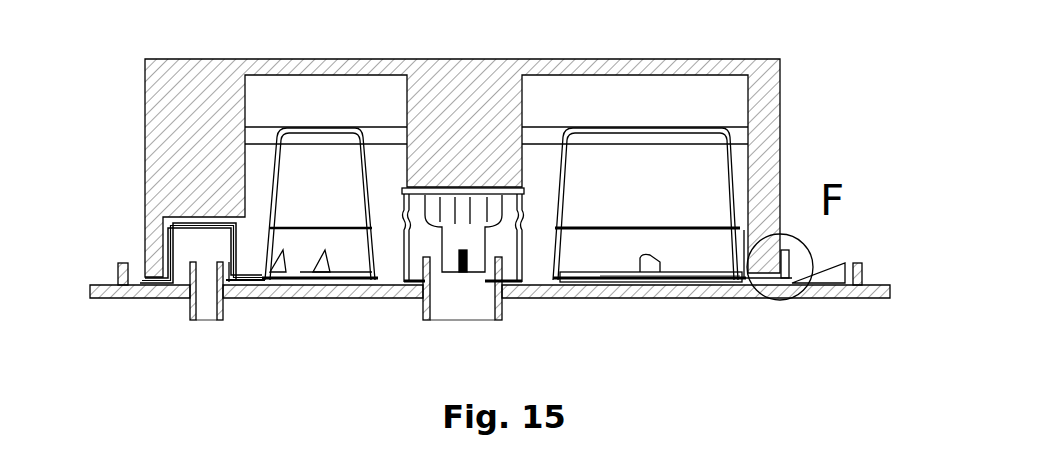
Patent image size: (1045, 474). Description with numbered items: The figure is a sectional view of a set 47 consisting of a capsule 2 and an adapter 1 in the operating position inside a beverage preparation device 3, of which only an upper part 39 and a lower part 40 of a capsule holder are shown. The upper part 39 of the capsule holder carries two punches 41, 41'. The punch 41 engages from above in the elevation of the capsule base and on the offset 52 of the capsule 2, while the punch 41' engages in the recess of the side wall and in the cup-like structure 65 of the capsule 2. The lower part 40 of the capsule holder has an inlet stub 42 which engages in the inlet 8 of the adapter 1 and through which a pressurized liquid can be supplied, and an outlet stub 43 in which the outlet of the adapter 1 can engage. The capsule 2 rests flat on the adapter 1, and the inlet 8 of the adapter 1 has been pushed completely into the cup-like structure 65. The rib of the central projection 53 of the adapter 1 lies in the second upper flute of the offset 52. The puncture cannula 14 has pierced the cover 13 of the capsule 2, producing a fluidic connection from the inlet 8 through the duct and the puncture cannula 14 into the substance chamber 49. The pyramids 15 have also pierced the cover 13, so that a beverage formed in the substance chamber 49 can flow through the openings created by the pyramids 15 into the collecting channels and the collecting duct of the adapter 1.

The adapter 1 is at (818, 288).
The capsule 2 is at (744, 208).
The beverage preparation device 3 is at (124, 90).
The inlet 8 is at (229, 282).
The cover 13 is at (704, 272).
The puncture cannula 14 is at (663, 262).
The pyramids 15 is at (325, 278).
The upper part of the capsule holder 39 is at (145, 138).
The lower part of the capsule holder 40 is at (135, 299).
The punch 41 is at (627, 145).
The punch 41' is at (309, 145).
The inlet stub 42 is at (205, 320).
The outlet stub 43 is at (472, 318).
The set 47 is at (832, 96).
The substance chamber 49 is at (645, 170).
The offset 52 is at (407, 187).
The central projection 53 is at (515, 218).
The cup-like structure 65 is at (147, 230).